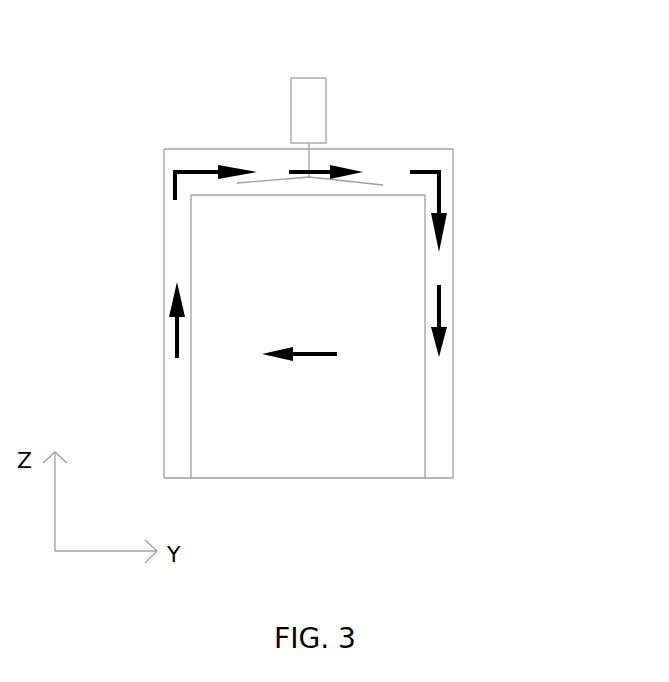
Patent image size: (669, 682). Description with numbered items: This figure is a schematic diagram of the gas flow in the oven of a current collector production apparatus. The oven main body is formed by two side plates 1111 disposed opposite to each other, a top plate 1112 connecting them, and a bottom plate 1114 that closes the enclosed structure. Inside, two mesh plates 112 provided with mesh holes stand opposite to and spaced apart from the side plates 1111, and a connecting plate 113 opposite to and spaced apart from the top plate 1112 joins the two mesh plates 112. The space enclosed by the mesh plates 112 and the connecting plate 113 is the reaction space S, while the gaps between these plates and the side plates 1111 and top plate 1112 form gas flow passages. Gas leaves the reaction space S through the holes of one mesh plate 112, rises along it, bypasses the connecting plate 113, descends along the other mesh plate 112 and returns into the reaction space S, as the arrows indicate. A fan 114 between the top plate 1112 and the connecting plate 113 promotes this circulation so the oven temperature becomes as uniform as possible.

The top plate 1112 is at (223, 148).
The side plates 1111 is at (163, 353).
The bottom plate 1114 is at (402, 478).
The mesh plates 112 is at (192, 398).
The reaction space S is at (302, 272).
The fan 114 is at (312, 107).
The connecting plate 113 is at (257, 193).